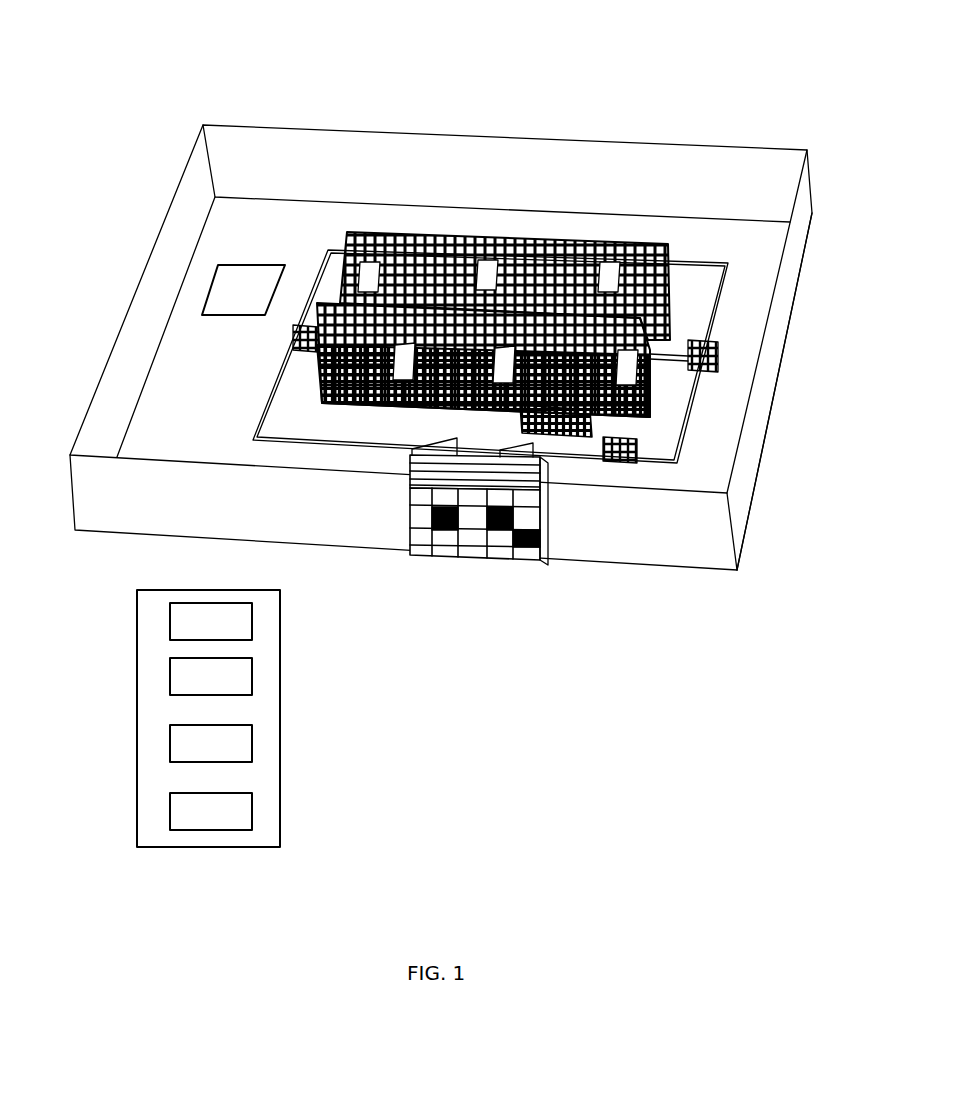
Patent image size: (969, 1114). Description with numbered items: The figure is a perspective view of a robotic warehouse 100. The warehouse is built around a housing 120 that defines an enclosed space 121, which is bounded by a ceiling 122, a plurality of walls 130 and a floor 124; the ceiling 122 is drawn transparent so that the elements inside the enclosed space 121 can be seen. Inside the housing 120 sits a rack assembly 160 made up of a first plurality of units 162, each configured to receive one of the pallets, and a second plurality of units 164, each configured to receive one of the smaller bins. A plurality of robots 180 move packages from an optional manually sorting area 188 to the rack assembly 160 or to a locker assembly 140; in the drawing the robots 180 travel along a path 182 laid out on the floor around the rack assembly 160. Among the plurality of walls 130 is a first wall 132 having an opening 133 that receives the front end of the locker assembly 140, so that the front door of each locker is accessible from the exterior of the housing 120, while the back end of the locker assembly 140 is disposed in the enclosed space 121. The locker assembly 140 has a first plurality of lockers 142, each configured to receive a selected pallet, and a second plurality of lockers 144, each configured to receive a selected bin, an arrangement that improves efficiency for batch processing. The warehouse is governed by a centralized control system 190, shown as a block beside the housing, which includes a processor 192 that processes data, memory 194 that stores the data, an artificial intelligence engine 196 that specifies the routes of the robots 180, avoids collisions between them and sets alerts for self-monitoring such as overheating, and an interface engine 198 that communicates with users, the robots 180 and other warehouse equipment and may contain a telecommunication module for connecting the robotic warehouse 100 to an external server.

The robotic warehouse 100 is at (90, 70).
The housing 120 is at (138, 178).
The enclosed space 121 is at (198, 343).
The ceiling 122 is at (232, 222).
The floor 124 is at (738, 242).
The plurality of walls 130 is at (757, 428).
The first wall 132 is at (597, 545).
The opening 133 is at (500, 578).
The locker assembly 140 is at (456, 575).
The first plurality of lockers 142 is at (430, 545).
The second plurality of lockers 144 is at (548, 527).
The rack assembly 160 is at (530, 232).
The first plurality of units 162 is at (430, 232).
The second plurality of units 164 is at (360, 412).
The plurality of robots 180 is at (718, 345).
The substrate frame 182 is at (262, 394).
The manually sorting area 188 is at (259, 301).
The centralized control system 190 is at (153, 653).
The processor 192 is at (232, 633).
The memory 194 is at (232, 688).
The artificial intelligence engine 196 is at (232, 755).
The interface engine 198 is at (232, 823).